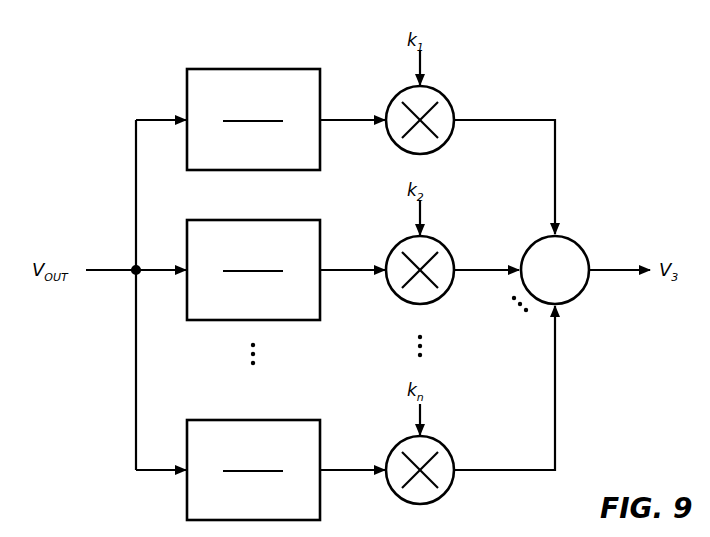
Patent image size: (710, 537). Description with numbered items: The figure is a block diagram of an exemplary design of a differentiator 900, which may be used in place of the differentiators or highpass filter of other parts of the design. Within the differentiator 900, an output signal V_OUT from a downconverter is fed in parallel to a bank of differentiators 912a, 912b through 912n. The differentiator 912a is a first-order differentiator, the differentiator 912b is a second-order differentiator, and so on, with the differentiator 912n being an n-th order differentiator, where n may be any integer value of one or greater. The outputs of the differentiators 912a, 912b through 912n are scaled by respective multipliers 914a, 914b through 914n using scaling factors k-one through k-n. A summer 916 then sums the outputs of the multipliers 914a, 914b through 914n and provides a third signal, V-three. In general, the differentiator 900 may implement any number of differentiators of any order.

The differentiator 900 is at (608, 66).
The first-order differentiator 912a is at (262, 56).
The second-order differentiator 912b is at (262, 207).
The n-th order differentiator 912n is at (262, 407).
The multiplier 914a is at (444, 94).
The multiplier 914b is at (444, 244).
The multiplier 914n is at (444, 444).
The summer 916 is at (579, 244).